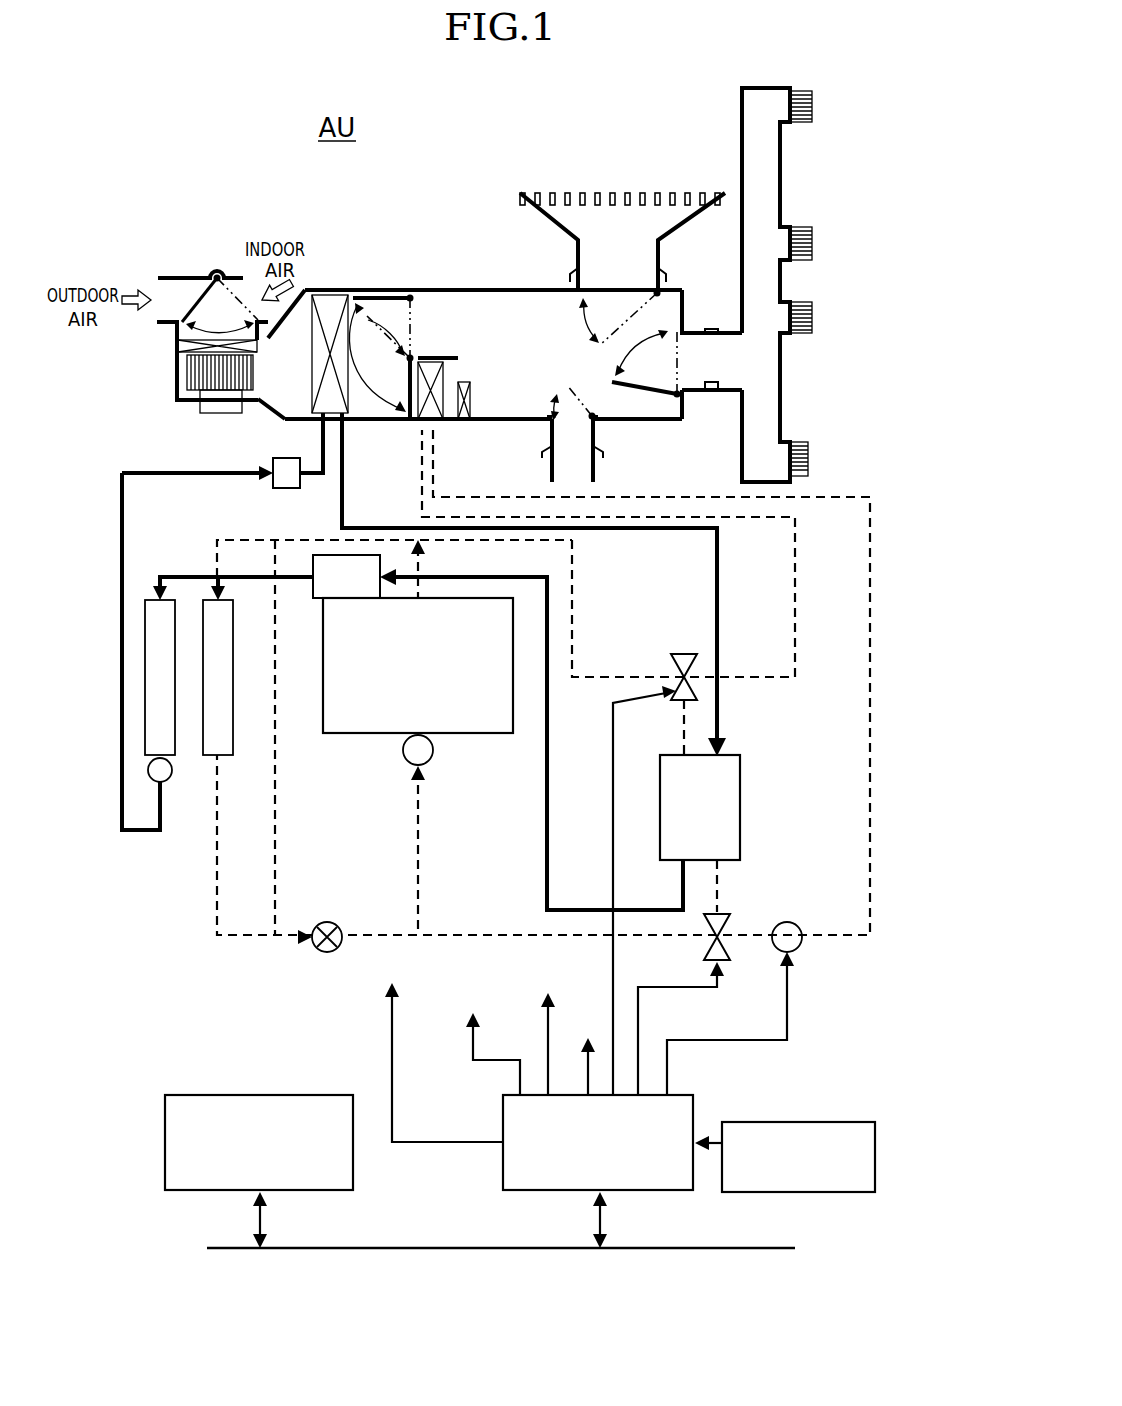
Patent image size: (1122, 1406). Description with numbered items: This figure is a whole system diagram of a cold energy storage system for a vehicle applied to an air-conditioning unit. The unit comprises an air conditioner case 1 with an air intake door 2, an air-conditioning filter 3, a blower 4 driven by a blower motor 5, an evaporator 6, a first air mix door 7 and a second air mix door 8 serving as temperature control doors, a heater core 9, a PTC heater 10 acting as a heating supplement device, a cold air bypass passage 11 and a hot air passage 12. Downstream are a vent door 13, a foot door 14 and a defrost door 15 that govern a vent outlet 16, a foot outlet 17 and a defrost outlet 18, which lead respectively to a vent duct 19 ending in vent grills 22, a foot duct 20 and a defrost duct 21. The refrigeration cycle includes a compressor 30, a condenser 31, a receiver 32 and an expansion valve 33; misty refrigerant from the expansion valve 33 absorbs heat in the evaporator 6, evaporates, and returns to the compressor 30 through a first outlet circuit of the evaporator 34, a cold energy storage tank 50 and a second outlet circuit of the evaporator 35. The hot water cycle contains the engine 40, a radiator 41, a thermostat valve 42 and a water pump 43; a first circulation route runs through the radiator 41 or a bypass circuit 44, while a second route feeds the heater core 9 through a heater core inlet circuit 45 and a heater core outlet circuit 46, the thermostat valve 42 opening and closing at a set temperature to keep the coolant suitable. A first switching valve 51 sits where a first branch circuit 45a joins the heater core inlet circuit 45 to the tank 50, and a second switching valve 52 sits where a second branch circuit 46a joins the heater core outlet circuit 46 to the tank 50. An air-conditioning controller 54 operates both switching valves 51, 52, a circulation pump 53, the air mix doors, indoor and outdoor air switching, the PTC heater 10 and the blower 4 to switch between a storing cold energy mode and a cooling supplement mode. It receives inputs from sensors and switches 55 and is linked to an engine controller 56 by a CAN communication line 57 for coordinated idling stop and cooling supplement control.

The air conditioner case 1 is at (458, 300).
The air intake door 2 is at (215, 275).
The air-conditioning filter 3 is at (175, 330).
The blower 4 is at (190, 375).
The blower motor 5 is at (202, 406).
The evaporator 6 is at (330, 300).
The first air mix door 7 is at (372, 300).
The second air mix door 8 is at (405, 405).
The heater core 9 is at (430, 412).
The PTC heater 10 is at (466, 398).
The cold air bypass passage 11 is at (430, 318).
The hot air passage 12 is at (495, 388).
The vent door 13 is at (660, 398).
The foot door 14 is at (575, 400).
The defrost door 15 is at (584, 300).
The vent outlet 16 is at (692, 392).
The foot outlet 17 is at (576, 426).
The defrost outlet 18 is at (640, 292).
The vent duct 19 is at (782, 392).
The foot duct 20 is at (596, 472).
The defrost duct 21 is at (565, 228).
The vent grill 22 is at (812, 108).
The compressor 30 is at (315, 555).
The condenser 31 is at (176, 745).
The receiver 32 is at (152, 830).
The expansion valve 33 is at (272, 465).
The first outlet circuit of the evaporator 34 is at (720, 577).
The second outlet circuit of the evaporator 35 is at (575, 908).
The engine 40 is at (480, 733).
The radiator 41 is at (233, 748).
The thermostat valve 42 is at (322, 953).
The water pump 43 is at (432, 760).
The bypass circuit 44 is at (277, 805).
The heater core inlet circuit 45 is at (574, 575).
The first branch circuit 45a is at (683, 742).
The heater core outlet circuit 46 is at (868, 802).
The second branch circuit 46a is at (720, 882).
The cold energy storage tank 50 is at (742, 765).
The first switching valve 51 is at (684, 652).
The second switching valve 52 is at (726, 916).
The circulation pump 53 is at (800, 947).
The air-conditioning controller 54 is at (682, 1094).
The sensors and switches 55 is at (822, 1121).
The engine controller 56 is at (181, 1094).
The CAN communication line 57 is at (541, 1248).